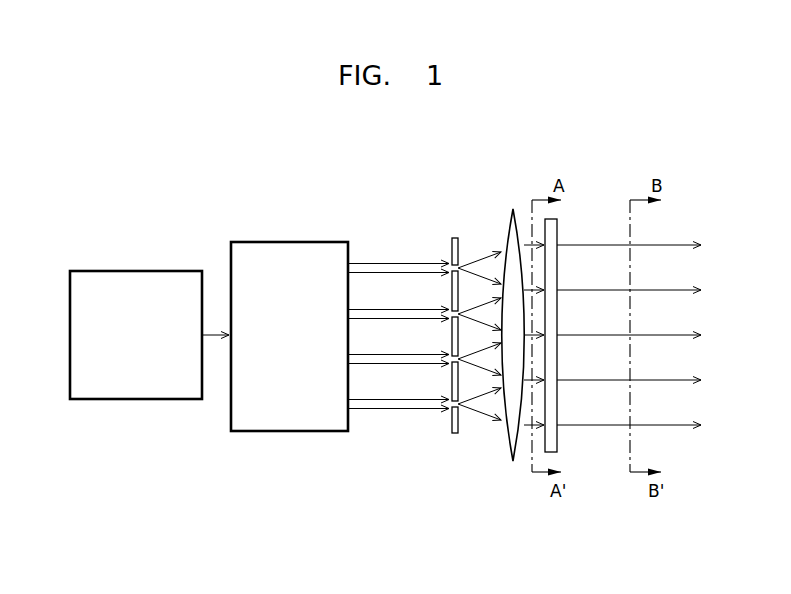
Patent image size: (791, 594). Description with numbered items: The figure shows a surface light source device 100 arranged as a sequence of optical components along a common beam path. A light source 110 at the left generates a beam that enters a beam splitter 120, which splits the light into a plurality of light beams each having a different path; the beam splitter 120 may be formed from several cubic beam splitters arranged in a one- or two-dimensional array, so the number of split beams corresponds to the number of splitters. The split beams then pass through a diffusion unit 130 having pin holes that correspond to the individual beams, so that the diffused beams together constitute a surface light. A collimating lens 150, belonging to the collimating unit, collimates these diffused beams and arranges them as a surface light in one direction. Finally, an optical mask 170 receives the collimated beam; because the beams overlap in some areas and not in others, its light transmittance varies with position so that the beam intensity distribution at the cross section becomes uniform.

The surface light source device 100 is at (159, 174).
The light source 110 is at (136, 270).
The beam splitter 120 is at (290, 241).
The diffusion unit 130 is at (455, 237).
The collimating lens 150 is at (513, 208).
The optical mask 170 is at (557, 232).